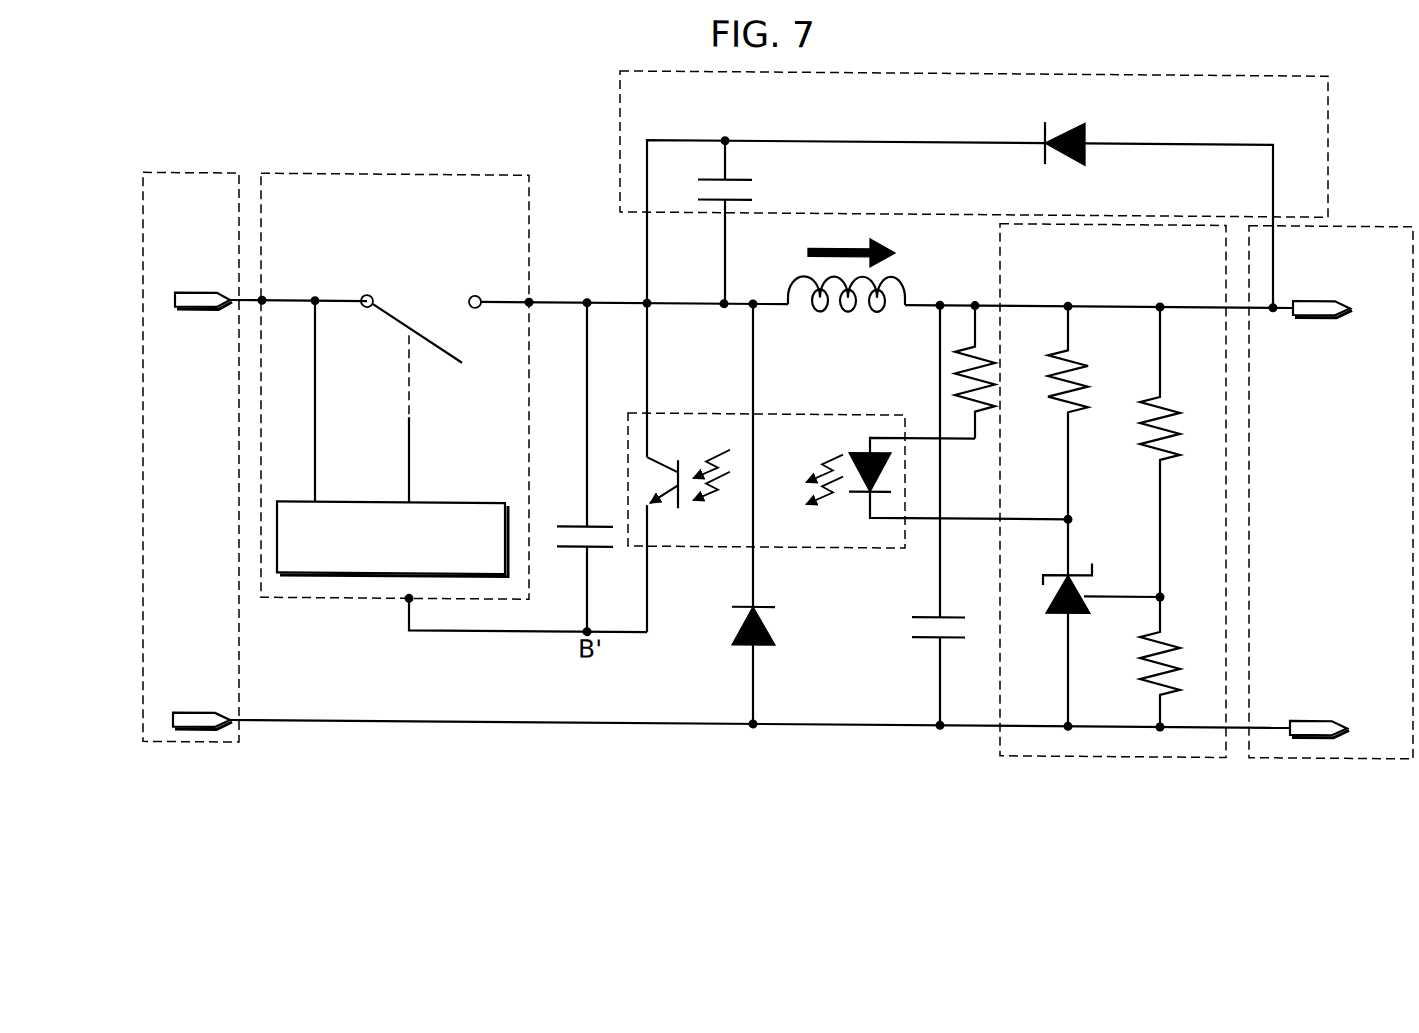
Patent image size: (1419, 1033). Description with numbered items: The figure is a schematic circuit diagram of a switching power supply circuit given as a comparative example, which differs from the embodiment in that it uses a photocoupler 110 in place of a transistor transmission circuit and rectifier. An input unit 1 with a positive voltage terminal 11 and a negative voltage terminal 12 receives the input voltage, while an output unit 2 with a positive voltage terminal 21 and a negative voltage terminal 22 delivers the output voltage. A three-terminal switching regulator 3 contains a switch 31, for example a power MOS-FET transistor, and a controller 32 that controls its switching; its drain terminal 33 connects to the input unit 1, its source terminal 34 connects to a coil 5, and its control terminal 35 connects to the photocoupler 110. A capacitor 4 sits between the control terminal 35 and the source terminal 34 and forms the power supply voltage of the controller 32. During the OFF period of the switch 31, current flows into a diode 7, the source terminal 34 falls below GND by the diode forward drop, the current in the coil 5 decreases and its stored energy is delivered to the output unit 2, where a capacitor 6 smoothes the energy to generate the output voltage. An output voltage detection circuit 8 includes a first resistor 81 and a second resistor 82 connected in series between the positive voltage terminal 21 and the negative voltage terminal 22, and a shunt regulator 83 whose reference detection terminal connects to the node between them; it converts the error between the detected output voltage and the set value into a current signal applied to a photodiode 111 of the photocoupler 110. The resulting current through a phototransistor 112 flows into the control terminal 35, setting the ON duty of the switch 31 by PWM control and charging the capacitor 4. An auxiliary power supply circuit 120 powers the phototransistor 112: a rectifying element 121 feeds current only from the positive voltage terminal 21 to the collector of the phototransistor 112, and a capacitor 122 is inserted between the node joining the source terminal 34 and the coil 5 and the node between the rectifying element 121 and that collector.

The input unit 1 is at (183, 172).
The output unit 2 is at (1357, 218).
The three-terminal switching regulator 3 is at (510, 171).
The capacitor 4 is at (585, 466).
The coil 5 is at (846, 294).
The capacitor 6 is at (940, 515).
The diode 7 is at (742, 514).
The output voltage detection circuit 8 is at (1142, 753).
The positive voltage terminal 11 is at (200, 319).
The negative voltage terminal 12 is at (198, 689).
The positive voltage terminal 21 is at (1310, 312).
The negative voltage terminal 22 is at (1308, 712).
The switch 31 is at (411, 395).
The controller 32 is at (392, 523).
The drain terminal 33 is at (258, 297).
The source terminal 34 is at (532, 297).
The control terminal 35 is at (405, 603).
The first resistor 81 is at (1137, 451).
The second resistor 82 is at (1138, 662).
The shunt regulator 83 is at (1048, 623).
The photocoupler 110 is at (832, 545).
The photodiode 111 is at (937, 490).
The phototransistor 112 is at (688, 468).
The auxiliary power supply circuit 120 is at (1237, 68).
The rectifying element 121 is at (1066, 162).
The capacitor 122 is at (754, 223).